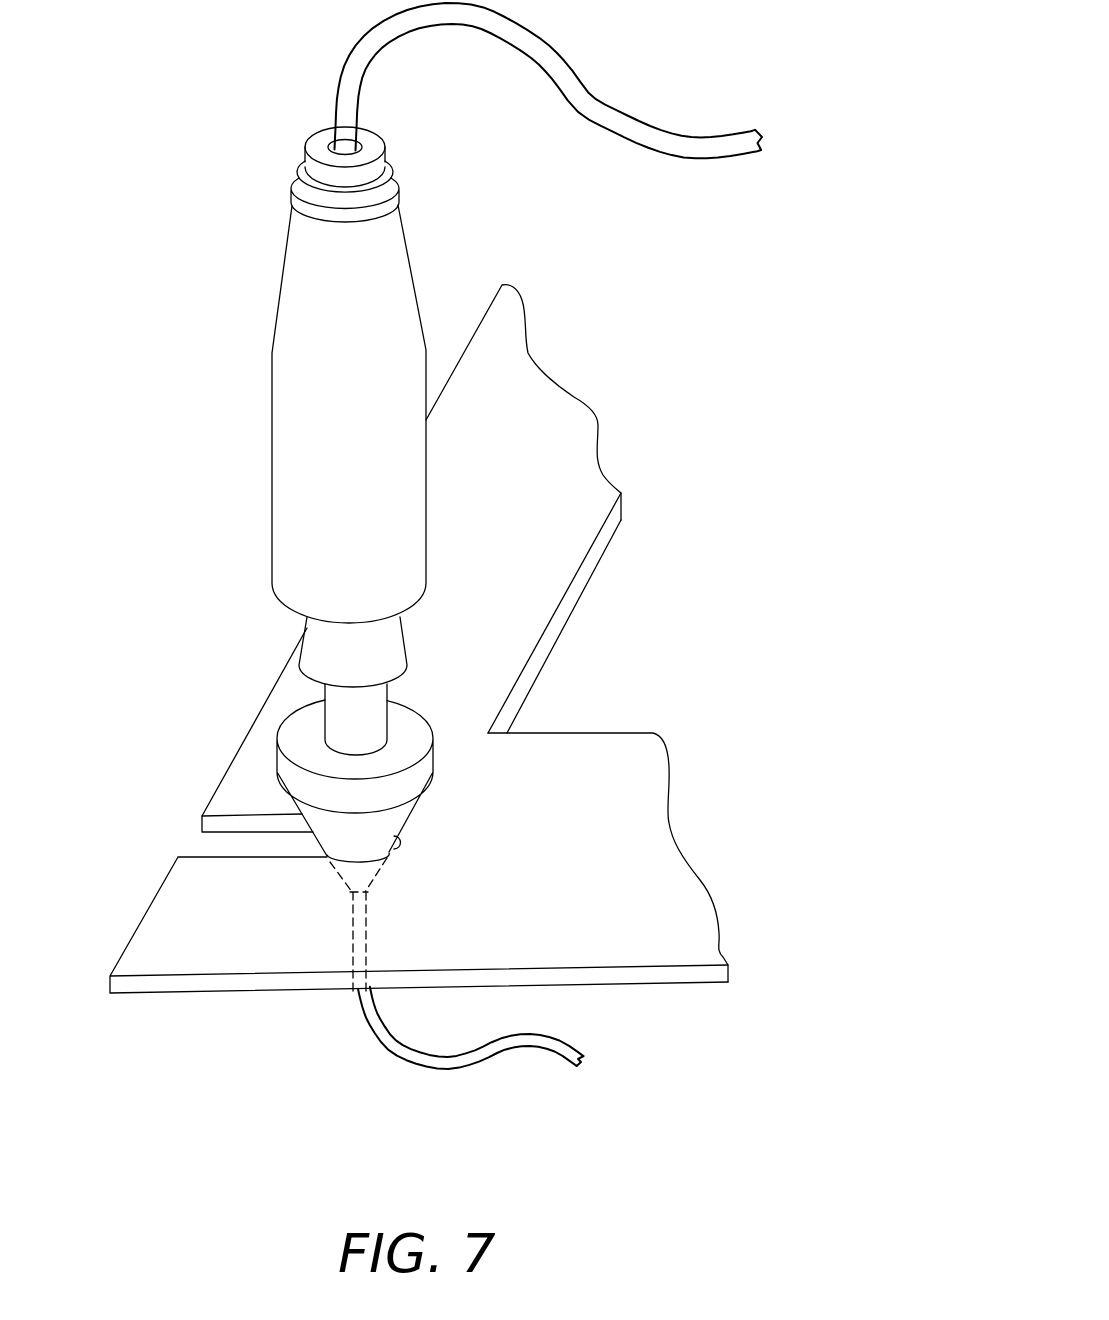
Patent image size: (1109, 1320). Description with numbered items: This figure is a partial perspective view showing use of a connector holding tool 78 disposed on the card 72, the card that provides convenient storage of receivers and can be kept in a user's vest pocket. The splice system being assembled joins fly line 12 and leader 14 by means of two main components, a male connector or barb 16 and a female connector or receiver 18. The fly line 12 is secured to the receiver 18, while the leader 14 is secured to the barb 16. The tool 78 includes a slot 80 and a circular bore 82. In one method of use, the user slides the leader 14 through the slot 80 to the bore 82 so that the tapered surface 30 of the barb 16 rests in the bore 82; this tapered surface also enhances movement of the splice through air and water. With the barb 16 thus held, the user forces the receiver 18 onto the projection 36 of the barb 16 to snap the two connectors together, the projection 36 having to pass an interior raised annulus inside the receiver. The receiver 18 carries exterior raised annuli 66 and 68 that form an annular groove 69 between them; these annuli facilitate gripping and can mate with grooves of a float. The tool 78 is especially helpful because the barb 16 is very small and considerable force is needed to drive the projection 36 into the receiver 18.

The fly line 12 is at (588, 96).
The leader 14 is at (380, 1043).
The barb 16 is at (268, 706).
The receiver 18 is at (308, 448).
The tapered surface 30 is at (418, 808).
The projection 36 is at (382, 645).
The exterior raised annulus 66 is at (295, 172).
The exterior raised annulus 68 is at (292, 192).
The annular groove 69 is at (372, 199).
The card 72 is at (553, 421).
The tool 78 is at (245, 822).
The slot 80 is at (213, 855).
The circular bore 82 is at (358, 863).